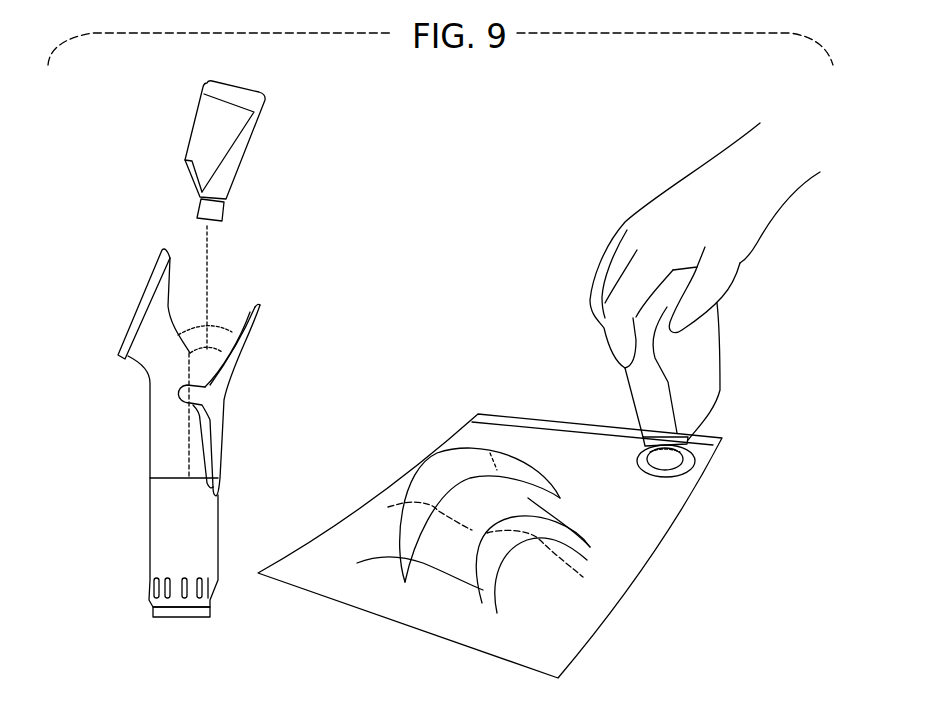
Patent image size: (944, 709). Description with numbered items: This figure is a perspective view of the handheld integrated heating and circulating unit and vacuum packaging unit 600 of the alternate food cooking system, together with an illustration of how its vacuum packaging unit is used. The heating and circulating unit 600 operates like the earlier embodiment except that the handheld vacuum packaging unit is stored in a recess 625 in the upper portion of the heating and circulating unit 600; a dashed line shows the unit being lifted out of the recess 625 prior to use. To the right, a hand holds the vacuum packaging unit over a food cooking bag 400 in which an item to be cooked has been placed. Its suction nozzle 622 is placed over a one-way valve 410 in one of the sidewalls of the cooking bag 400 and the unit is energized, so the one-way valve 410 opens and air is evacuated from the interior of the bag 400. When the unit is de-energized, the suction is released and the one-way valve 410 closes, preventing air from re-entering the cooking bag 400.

The food cooking bag 400 is at (504, 546).
The one-way valve 410 is at (667, 477).
The heating and circulating unit and vacuum packaging unit 600 is at (192, 433).
The suction nozzle 622 is at (683, 460).
The recess 625 is at (227, 337).